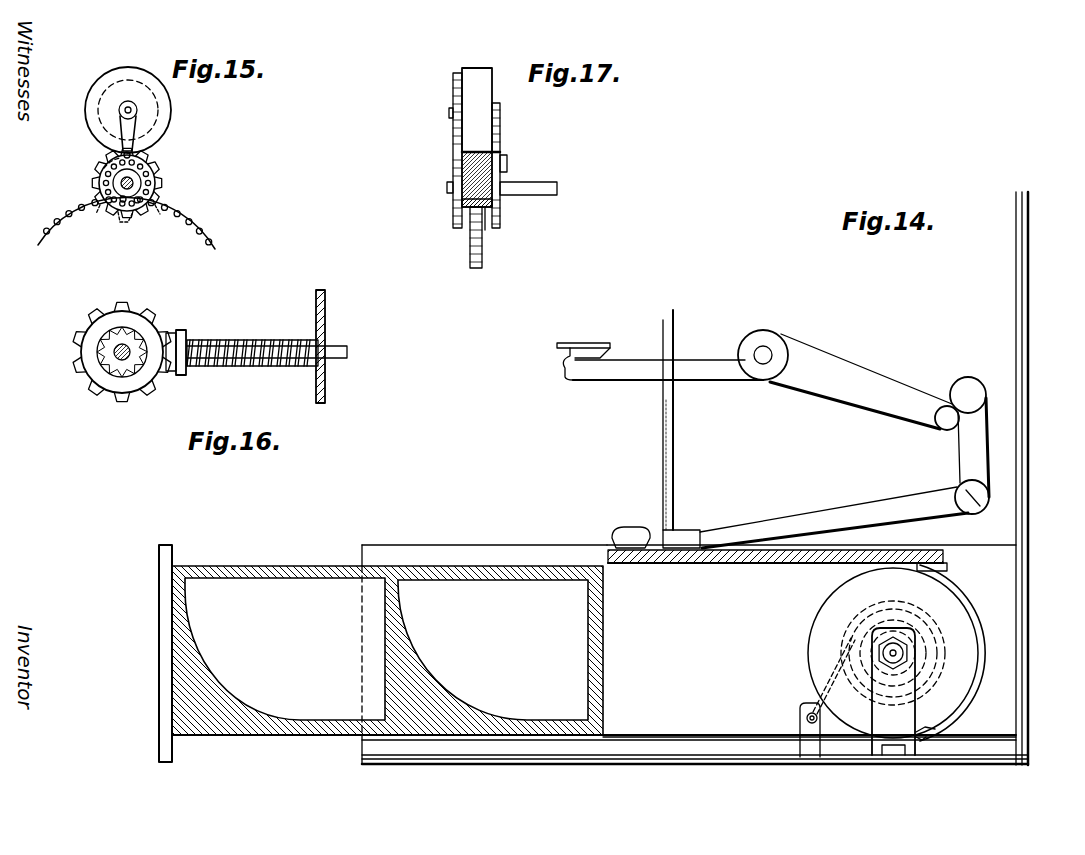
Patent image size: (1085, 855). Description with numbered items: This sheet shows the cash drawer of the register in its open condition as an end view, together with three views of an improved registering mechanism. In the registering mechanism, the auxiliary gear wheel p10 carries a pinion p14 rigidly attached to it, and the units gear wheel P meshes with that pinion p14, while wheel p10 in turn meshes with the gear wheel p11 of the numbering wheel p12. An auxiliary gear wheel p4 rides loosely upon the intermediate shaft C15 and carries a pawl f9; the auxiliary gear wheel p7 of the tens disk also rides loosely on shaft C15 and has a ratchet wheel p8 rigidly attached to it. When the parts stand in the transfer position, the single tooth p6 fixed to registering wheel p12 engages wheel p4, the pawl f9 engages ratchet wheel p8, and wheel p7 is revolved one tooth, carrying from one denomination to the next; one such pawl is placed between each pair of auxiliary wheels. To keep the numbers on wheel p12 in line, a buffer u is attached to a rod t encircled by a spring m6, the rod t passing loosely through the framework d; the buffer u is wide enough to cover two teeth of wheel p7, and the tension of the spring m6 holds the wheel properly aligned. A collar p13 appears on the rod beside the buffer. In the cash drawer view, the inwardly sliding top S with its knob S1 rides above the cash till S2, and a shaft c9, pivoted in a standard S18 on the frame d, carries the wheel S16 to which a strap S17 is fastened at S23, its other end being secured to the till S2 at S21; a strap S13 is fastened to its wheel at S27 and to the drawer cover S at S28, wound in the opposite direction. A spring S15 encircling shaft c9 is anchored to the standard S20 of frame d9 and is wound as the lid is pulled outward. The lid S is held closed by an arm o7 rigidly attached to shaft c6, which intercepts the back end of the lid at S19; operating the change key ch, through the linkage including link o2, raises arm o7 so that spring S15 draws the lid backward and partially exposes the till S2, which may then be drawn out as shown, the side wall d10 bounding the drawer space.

In FIG. 15, the registering wheel p12 is at (125, 67).
In FIG. 17, the registering wheel p12 is at (478, 67).
In FIG. 15, the gear wheel p11 is at (97, 101).
In FIG. 17, the gear wheel p11 is at (455, 129).
In FIG. 15, the single tooth p6 is at (140, 122).
In FIG. 17, the single tooth p6 is at (501, 122).
In FIG. 15, the pawl f9 is at (103, 164).
In FIG. 17, the pawl f9 is at (508, 165).
In FIG. 15, the auxiliary gear wheel p10 is at (164, 181).
In FIG. 17, the auxiliary gear wheel p10 is at (455, 212).
In FIG. 15, the shaft C15 is at (134, 188).
In FIG. 16, the shaft C15 is at (114, 360).
In FIG. 17, the shaft C15 is at (447, 187).
In FIG. 15, the gear wheel P is at (217, 241).
In FIG. 17, the gear wheel P is at (480, 264).
In FIG. 16, the auxiliary gear wheel p7 is at (80, 322).
In FIG. 16, the ratchet wheel p8 is at (100, 349).
In FIG. 16, the collar p13 is at (171, 326).
In FIG. 16, the buffer u is at (188, 338).
In FIG. 16, the spring m6 is at (250, 367).
In FIG. 16, the rod t is at (343, 352).
In FIG. 16, the framework d is at (326, 315).
In FIG. 17, the auxiliary gear wheel p4 is at (494, 206).
In FIG. 17, the pinion p14 is at (485, 228).
In FIG. 14, the frame wall d10 is at (1023, 341).
In FIG. 14, the frame d9 is at (958, 765).
In FIG. 14, the cash till S2 is at (383, 654).
In FIG. 14, the attachment point of strap s17 S21 is at (572, 740).
In FIG. 14, the strap S17 is at (701, 736).
In FIG. 14, the inwardly sliding top S is at (792, 564).
In FIG. 14, the knob S1 is at (631, 526).
In FIG. 14, the back end of lid S19 is at (702, 530).
In FIG. 14, the change key ch is at (672, 352).
In FIG. 14, the link o2 is at (960, 448).
In FIG. 14, the arm o7 is at (851, 513).
In FIG. 14, the shaft c6 is at (985, 505).
In FIG. 14, the wheel S16 is at (948, 694).
In FIG. 14, the shaft c9 is at (918, 650).
In FIG. 14, the spring S15 is at (846, 637).
In FIG. 14, the standard S18 is at (893, 691).
In FIG. 14, the standard S20 is at (807, 717).
In FIG. 14, the strap S13 is at (963, 590).
In FIG. 14, the attachment point of strap s13 S28 is at (949, 568).
In FIG. 14, the attachment point of strap s13 S27 is at (937, 730).
In FIG. 14, the attachment point of strap s17 S23 is at (920, 739).